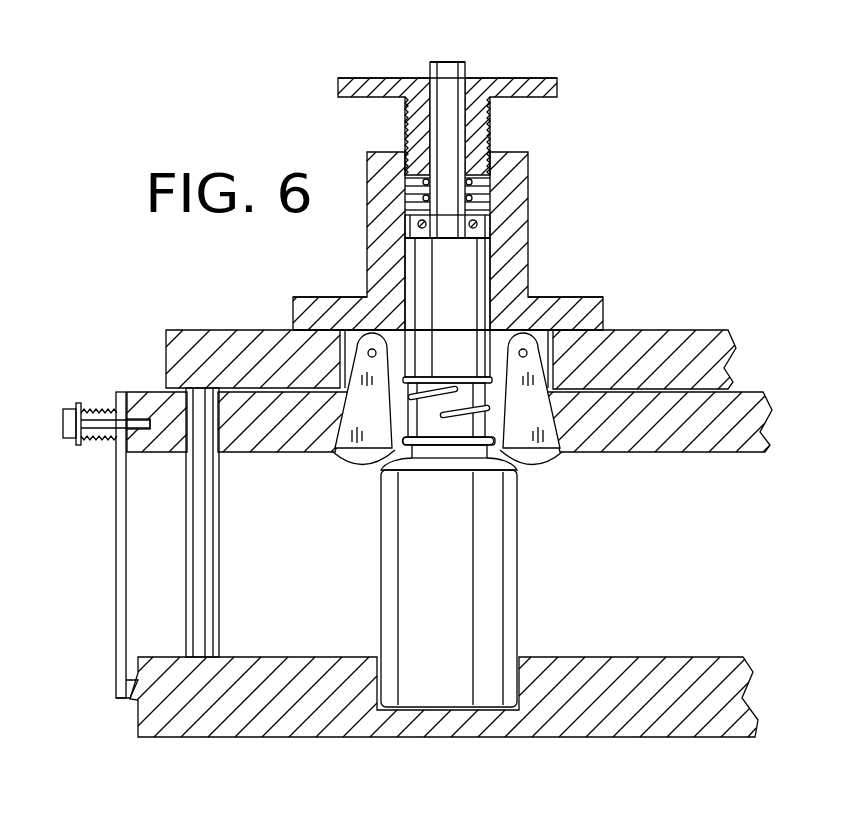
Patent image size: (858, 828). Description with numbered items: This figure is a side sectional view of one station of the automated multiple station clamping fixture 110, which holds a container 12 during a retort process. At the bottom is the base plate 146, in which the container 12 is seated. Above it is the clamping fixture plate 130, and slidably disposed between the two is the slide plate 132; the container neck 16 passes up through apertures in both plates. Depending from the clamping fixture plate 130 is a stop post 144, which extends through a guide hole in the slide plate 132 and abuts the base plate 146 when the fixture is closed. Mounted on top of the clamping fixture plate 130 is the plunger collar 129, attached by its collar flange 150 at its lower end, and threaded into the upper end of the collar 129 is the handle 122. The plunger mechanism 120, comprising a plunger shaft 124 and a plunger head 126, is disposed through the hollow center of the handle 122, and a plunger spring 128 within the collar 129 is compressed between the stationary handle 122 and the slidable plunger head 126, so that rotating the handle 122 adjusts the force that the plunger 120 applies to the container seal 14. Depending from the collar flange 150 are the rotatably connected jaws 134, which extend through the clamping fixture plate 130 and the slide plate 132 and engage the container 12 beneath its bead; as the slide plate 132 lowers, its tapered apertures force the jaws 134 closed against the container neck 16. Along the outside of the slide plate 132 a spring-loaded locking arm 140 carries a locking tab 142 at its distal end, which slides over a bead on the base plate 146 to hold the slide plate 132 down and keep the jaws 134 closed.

The automated multiple station clamping fixture 110 is at (610, 110).
The plunger mechanism 120 is at (455, 55).
The handle 122 is at (555, 78).
The plunger shaft 124 is at (437, 70).
The plunger head 126 is at (425, 275).
The plunger spring 128 is at (505, 185).
The plunger collar 129 is at (518, 230).
The collar flange 150 is at (600, 315).
The clamping fixture plate 130 is at (720, 360).
The slide plate 132 is at (758, 433).
The container seal 14 is at (370, 360).
The jaws 134 is at (360, 455).
The container neck 16 is at (480, 428).
The container 12 is at (490, 625).
The locking arm 140 is at (118, 548).
The locking tab 142 is at (127, 682).
The stop post 144 is at (210, 617).
The base plate 146 is at (740, 690).